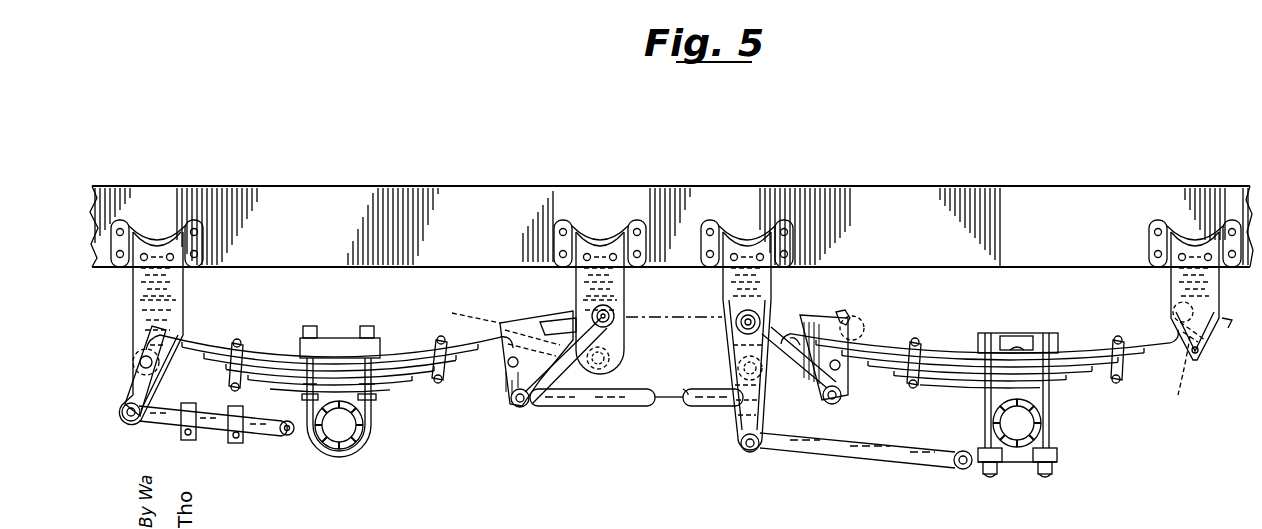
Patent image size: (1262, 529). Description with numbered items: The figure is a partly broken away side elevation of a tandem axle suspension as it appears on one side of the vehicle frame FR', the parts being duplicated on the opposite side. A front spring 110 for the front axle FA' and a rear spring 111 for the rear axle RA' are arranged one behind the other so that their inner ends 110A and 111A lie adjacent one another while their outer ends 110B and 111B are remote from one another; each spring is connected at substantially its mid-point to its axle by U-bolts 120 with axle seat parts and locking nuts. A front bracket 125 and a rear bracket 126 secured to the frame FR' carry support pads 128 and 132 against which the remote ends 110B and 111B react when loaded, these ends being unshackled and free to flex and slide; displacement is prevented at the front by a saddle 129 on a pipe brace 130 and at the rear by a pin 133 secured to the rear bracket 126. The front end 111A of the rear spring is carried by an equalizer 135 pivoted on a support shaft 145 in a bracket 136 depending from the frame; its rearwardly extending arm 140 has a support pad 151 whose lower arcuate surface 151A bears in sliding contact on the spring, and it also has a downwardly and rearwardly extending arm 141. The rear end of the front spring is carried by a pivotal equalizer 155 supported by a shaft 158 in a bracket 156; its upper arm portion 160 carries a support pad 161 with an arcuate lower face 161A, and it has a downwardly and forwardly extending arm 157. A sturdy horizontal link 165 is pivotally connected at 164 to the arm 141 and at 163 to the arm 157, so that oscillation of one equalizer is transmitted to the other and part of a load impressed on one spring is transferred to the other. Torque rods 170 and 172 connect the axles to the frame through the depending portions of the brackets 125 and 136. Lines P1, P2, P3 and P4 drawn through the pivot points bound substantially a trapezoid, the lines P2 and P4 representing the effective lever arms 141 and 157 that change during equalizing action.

The front bracket 125 is at (137, 238).
The bracket 156 is at (590, 237).
The bracket 136 is at (735, 237).
The rear bracket 126 is at (1170, 237).
The frame FR' is at (671, 205).
The front spring 110 is at (397, 350).
The inner end of front spring 110A is at (556, 320).
The outer end of front spring 110B is at (128, 318).
The rear spring 111 is at (935, 343).
The inner end of rear spring 111A is at (812, 315).
The outer end of rear spring 111B is at (1231, 329).
The U-bolts 120 is at (370, 444).
The front axle FA' is at (353, 449).
The rear axle RA' is at (1053, 424).
The support pad 128 is at (162, 315).
The saddle 129 is at (128, 343).
The pipe brace 130 is at (122, 379).
The torque rod 170 is at (216, 430).
The upper arm portion 160 is at (536, 320).
The support pad 161 is at (466, 312).
The arcuate lower face 161A is at (538, 345).
The shaft 158 is at (612, 294).
The line P1 is at (658, 318).
The line P2 is at (589, 367).
The line P3 is at (618, 408).
The line P4 is at (800, 340).
The pivotal equalizer 155 is at (497, 366).
The pivotal connection 163 is at (516, 407).
The arm 157 is at (545, 404).
The horizontal link 165 is at (583, 408).
The support shaft 145 is at (762, 306).
The rearwardly extending arm 140 is at (856, 318).
The support pad 151 is at (860, 313).
The lower arcuate surface 151A is at (843, 370).
The equalizer 135 is at (855, 331).
The downwardly and rearwardly extending arm 141 is at (797, 396).
The pivotal connection 164 is at (840, 401).
The torque rod 172 is at (838, 464).
The support pad 132 is at (1170, 300).
The pin 133 is at (1178, 396).